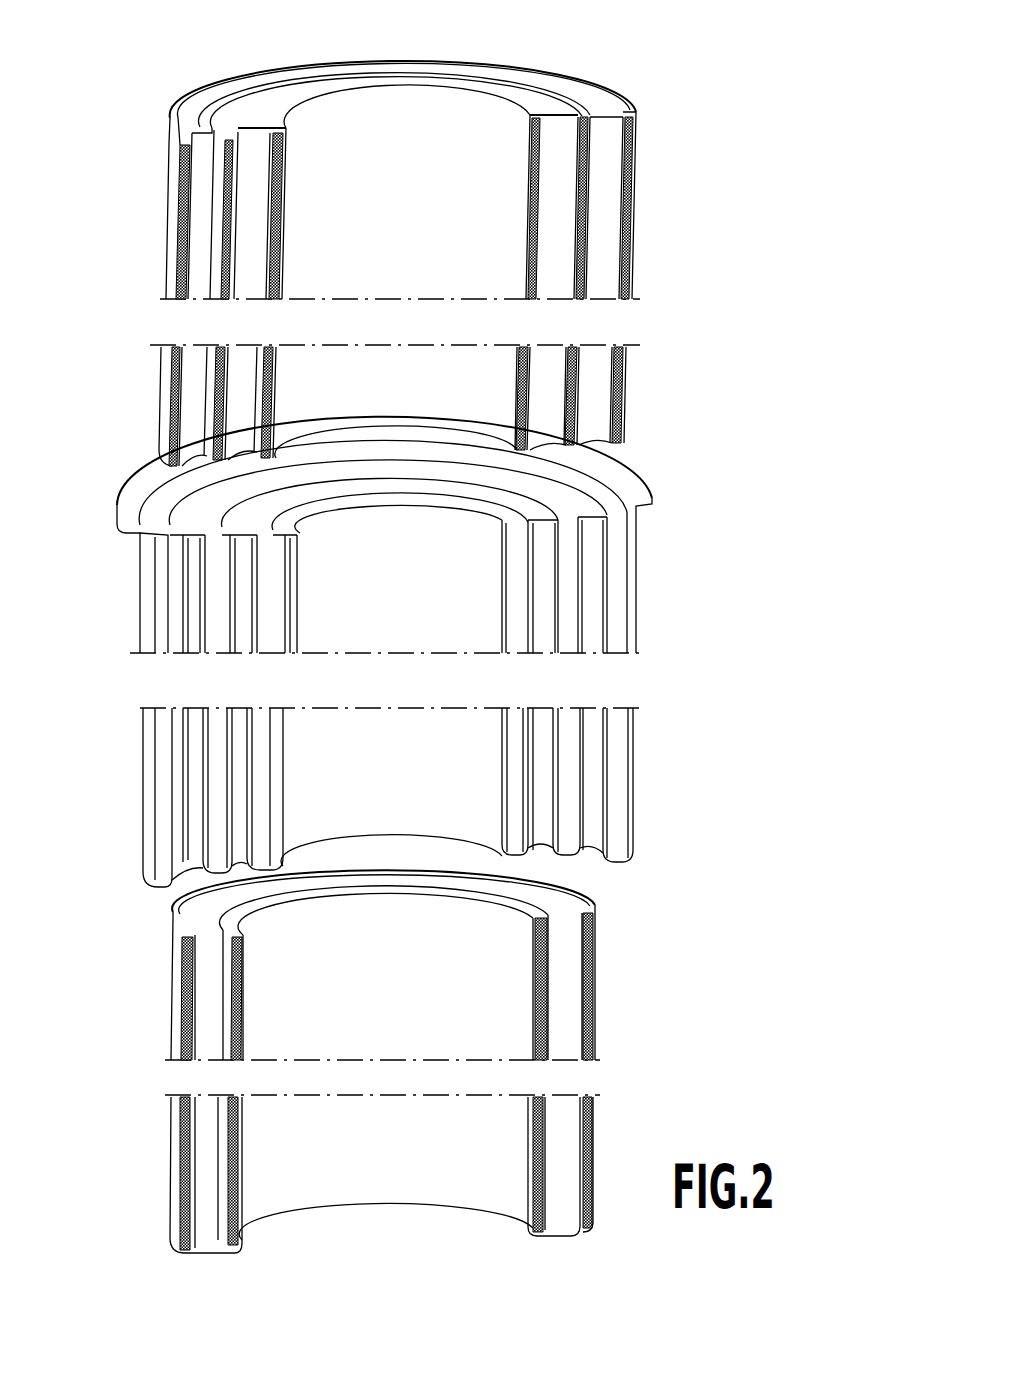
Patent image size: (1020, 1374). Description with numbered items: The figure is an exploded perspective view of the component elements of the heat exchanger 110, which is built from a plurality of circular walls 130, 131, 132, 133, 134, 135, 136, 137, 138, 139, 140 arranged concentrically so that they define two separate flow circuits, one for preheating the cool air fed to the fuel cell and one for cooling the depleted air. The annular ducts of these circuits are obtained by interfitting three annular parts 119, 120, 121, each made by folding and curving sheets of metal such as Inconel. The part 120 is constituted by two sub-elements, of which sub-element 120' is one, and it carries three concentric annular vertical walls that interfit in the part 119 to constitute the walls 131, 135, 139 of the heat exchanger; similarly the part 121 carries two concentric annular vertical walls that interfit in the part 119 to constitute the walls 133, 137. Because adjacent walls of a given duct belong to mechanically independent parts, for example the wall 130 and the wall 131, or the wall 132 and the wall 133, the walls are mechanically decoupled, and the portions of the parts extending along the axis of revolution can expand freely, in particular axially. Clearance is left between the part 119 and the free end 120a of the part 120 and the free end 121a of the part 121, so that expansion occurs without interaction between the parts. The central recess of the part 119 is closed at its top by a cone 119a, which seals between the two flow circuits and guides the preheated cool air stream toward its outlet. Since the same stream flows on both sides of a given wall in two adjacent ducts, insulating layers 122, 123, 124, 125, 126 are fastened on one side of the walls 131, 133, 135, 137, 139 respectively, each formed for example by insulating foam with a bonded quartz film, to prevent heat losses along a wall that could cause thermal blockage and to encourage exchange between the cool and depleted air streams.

The heat exchanger 110 is at (104, 95).
The annular part 119 is at (644, 489).
The cone 119a is at (380, 505).
The annular part 120 is at (401, 234).
The sub-element 120' is at (394, 164).
The free end 120a is at (507, 445).
The annular part 121 is at (380, 1189).
The free end 121a is at (575, 900).
The insulating layer 122 is at (272, 186).
The insulating layer 123 is at (228, 1158).
The insulating layer 124 is at (221, 288).
The insulating layer 125 is at (182, 984).
The insulating layer 126 is at (166, 380).
The circular wall 130 is at (485, 815).
The circular wall 131 is at (512, 150).
The circular wall 132 is at (522, 776).
The circular wall 133 is at (518, 1120).
The circular wall 134 is at (548, 722).
The circular wall 135 is at (558, 257).
The circular wall 136 is at (570, 628).
The circular wall 137 is at (570, 946).
The circular wall 138 is at (598, 588).
The circular wall 139 is at (601, 369).
The circular wall 140 is at (618, 543).